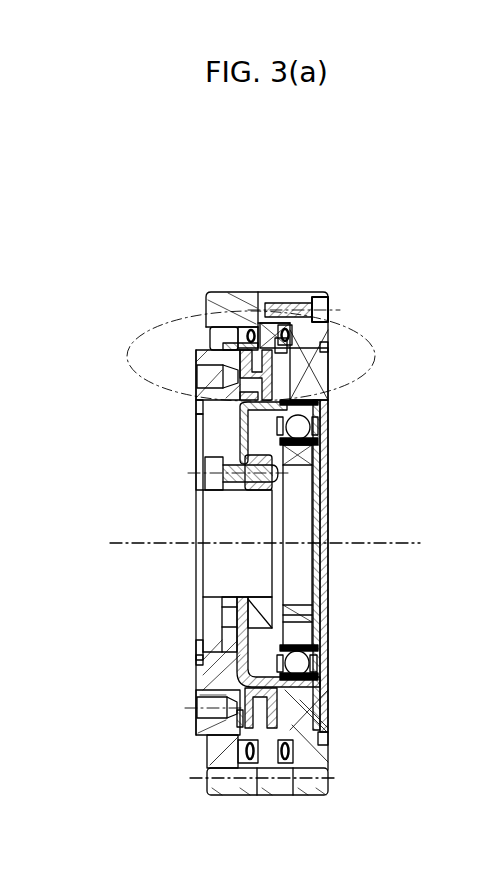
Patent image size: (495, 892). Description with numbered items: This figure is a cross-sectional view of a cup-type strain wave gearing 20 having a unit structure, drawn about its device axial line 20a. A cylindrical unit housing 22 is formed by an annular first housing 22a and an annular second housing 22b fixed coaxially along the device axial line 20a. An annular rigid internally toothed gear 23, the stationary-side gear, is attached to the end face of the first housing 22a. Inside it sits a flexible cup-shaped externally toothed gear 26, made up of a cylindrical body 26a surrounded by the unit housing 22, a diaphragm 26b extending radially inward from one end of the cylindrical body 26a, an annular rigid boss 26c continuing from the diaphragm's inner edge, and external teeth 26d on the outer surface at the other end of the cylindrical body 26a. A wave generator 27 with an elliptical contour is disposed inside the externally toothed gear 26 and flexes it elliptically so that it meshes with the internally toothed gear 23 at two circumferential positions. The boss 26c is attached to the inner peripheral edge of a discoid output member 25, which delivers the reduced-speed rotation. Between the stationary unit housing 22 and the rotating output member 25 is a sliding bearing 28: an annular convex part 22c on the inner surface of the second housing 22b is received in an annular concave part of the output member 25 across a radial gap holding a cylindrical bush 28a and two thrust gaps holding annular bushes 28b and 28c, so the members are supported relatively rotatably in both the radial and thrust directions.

The strain wave gearing 20 is at (120, 311).
The device axial line 20a is at (405, 543).
The unit housing 22 is at (240, 275).
The first housing 22a is at (280, 292).
The second housing 22b is at (237, 290).
The annular convex part 22c is at (214, 322).
The internally toothed gear 23 is at (327, 379).
The output member 25 is at (190, 430).
The externally toothed gear 26 is at (267, 564).
The cylindrical body 26a is at (320, 492).
The diaphragm 26b is at (244, 455).
The boss 26c is at (222, 488).
The external teeth 26d is at (318, 432).
The wave generator 27 is at (326, 480).
The sliding bearing 28 is at (237, 365).
The cylindrical bush 28a is at (197, 402).
The annular bush 28b is at (300, 350).
The annular bush 28c is at (220, 345).